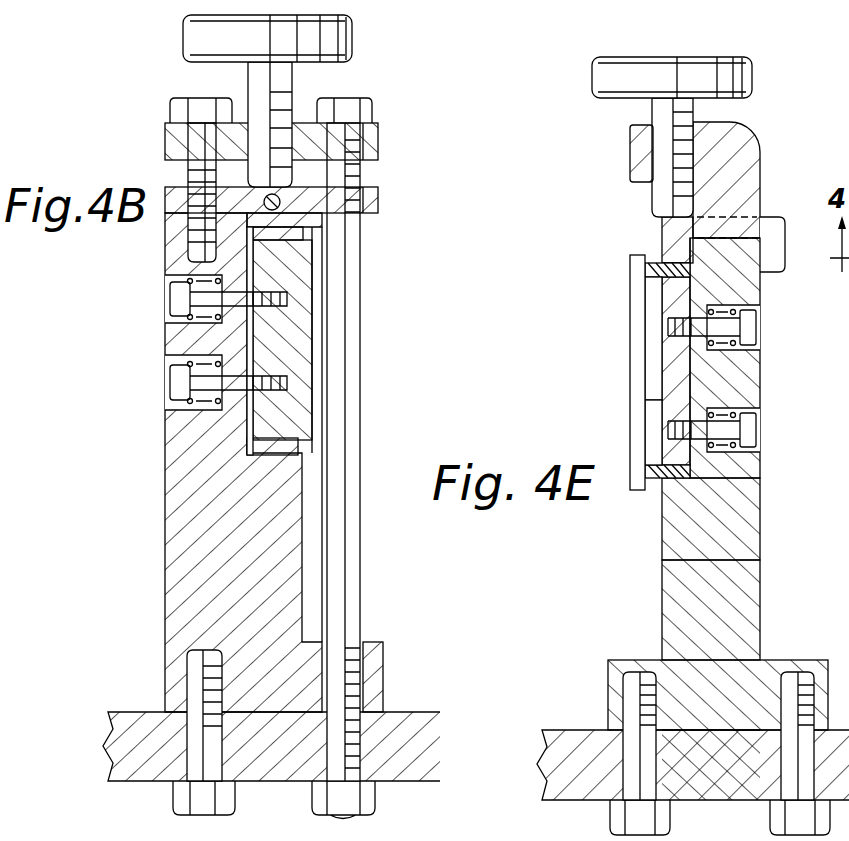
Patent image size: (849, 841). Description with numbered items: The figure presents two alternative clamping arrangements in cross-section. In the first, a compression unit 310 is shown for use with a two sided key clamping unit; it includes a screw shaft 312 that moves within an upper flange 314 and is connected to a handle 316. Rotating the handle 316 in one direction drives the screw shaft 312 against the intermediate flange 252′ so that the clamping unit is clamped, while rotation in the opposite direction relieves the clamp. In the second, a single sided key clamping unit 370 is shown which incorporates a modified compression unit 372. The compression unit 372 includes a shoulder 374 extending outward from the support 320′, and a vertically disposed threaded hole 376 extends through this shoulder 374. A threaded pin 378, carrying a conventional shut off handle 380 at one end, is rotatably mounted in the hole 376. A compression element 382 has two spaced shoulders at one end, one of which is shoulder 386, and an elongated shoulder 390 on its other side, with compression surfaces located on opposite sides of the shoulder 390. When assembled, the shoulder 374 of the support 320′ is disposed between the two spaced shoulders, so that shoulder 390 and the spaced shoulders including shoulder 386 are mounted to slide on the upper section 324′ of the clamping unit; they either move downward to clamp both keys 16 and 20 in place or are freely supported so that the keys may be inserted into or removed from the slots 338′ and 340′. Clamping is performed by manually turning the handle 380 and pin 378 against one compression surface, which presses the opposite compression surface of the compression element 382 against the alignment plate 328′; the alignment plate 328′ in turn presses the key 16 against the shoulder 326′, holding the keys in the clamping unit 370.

In FIG. 4B, the compression unit 310 is at (363, 47).
In FIG. 4B, the screw shaft 312 is at (277, 107).
In FIG. 4B, the upper flange 314 is at (326, 158).
In FIG. 4B, the handle 316 is at (188, 19).
In FIG. 4B, the intermediate flange 252′ is at (315, 180).
In FIG. 4E, the single sided key clamping unit 370 is at (773, 367).
In FIG. 4E, the compression unit 372 is at (762, 85).
In FIG. 4E, the shoulder 374 is at (730, 152).
In FIG. 4E, the threaded hole 376 is at (630, 168).
In FIG. 4E, the threaded pin 378 is at (667, 198).
In FIG. 4E, the shut off handle 380 is at (610, 58).
In FIG. 4E, the compression element 382 is at (790, 214).
In FIG. 4E, the shoulder 386 is at (778, 262).
In FIG. 4E, the elongated shoulder 390 is at (662, 236).
In FIG. 4E, the key 20 is at (660, 282).
In FIG. 4E, the slot 340′ is at (668, 303).
In FIG. 4E, the alignment plate 328′ is at (667, 378).
In FIG. 4E, the key 16 is at (660, 468).
In FIG. 4E, the slot 338′ is at (667, 480).
In FIG. 4E, the shoulder 326′ is at (673, 487).
In FIG. 4E, the upper section 324′ is at (760, 305).
In FIG. 4E, the support 320′ is at (737, 630).